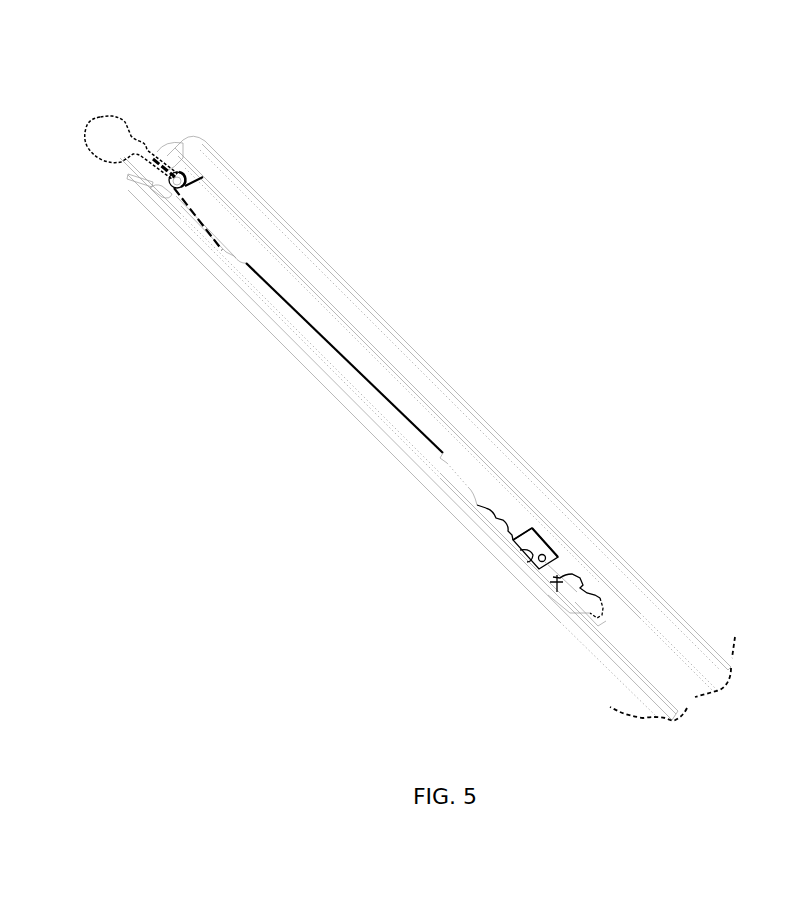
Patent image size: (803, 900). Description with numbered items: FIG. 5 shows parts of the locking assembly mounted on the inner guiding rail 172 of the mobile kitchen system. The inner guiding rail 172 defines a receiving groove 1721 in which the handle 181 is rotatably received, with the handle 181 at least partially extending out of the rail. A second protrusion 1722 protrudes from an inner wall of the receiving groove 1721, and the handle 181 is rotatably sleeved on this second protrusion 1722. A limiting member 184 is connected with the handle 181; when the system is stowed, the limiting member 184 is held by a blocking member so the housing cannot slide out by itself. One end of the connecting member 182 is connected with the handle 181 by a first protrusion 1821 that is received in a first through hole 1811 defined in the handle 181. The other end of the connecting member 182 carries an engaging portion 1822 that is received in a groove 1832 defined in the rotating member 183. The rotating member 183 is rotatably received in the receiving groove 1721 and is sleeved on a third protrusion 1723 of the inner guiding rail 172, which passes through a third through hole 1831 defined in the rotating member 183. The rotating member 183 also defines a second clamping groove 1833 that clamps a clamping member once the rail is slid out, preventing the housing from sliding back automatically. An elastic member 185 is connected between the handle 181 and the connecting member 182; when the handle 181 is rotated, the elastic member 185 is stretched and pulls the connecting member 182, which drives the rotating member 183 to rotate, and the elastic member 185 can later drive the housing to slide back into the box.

The inner guiding rail 172 is at (365, 300).
The receiving groove 1721 is at (243, 253).
The second protrusion 1722 is at (190, 181).
The third protrusion 1723 is at (545, 560).
The handle 181 is at (114, 116).
The first through hole 1811 is at (150, 190).
The connecting member 182 is at (303, 328).
The first protrusion 1821 is at (170, 199).
The engaging portion 1822 is at (526, 552).
The rotating member 183 is at (586, 612).
The third through hole 1831 is at (522, 562).
The groove 1832 is at (530, 530).
The second clamping groove 1833 is at (590, 593).
The limiting member 184 is at (183, 145).
The elastic member 185 is at (197, 217).